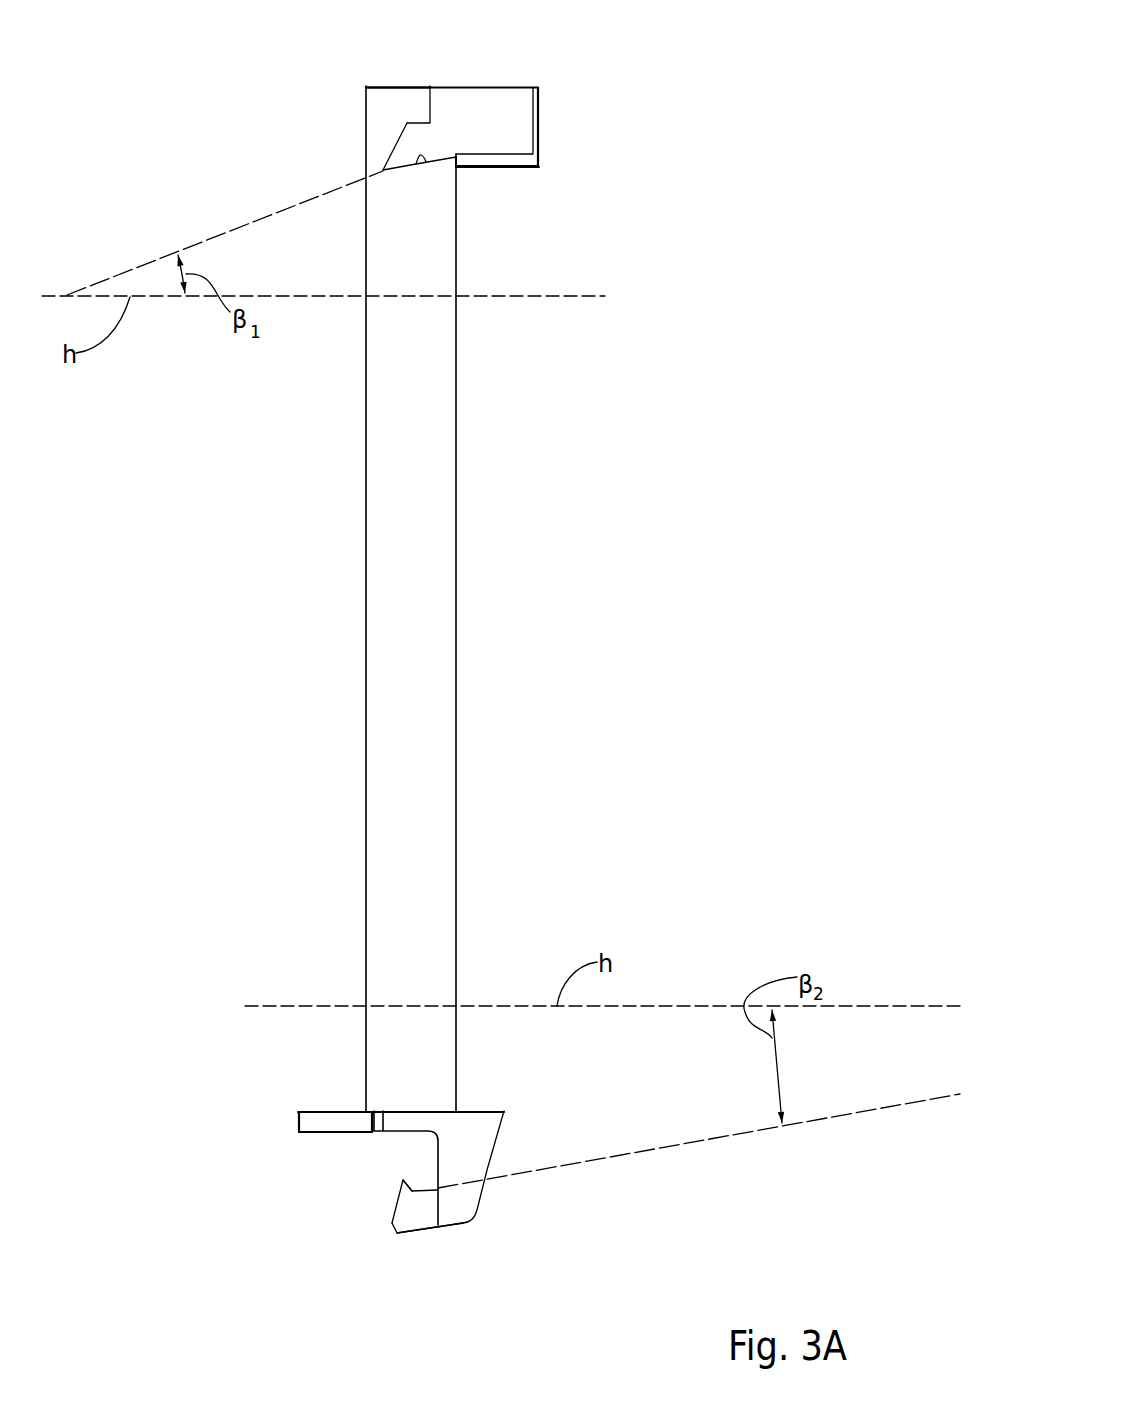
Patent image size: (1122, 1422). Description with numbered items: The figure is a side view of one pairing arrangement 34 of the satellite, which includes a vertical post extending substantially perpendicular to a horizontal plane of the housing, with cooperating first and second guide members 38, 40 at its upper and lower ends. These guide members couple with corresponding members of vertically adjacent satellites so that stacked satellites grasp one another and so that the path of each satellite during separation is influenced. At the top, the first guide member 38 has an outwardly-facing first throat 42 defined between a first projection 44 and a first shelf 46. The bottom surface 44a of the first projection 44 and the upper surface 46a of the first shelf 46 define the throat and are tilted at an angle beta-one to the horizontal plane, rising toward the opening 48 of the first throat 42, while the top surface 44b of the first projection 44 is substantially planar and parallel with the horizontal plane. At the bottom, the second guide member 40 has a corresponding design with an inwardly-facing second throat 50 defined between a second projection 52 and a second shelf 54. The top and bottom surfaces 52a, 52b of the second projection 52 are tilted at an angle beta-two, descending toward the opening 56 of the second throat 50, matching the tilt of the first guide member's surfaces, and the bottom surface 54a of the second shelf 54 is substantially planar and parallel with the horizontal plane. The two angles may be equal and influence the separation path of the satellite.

The pairing arrangement 34 is at (557, 561).
The first guide member 38 is at (343, 92).
The second guide member 40 is at (525, 1184).
The first throat 42 is at (415, 143).
The first projection 44 is at (409, 97).
The bottom surface of the first projection 44a is at (415, 143).
The top surface of the first projection 44b is at (392, 86).
The first shelf 46 is at (478, 168).
The upper surface of the first shelf 46a is at (420, 164).
The opening of the first throat 48 is at (437, 150).
The second throat 50 is at (418, 1165).
The second projection 52 is at (423, 1215).
The top surface of the second projection 52a is at (403, 1182).
The bottom surface of the second projection 52b is at (415, 1233).
The second shelf 54 is at (337, 1122).
The bottom surface of the second shelf 54a is at (343, 1133).
The opening of the second throat 56 is at (382, 1158).